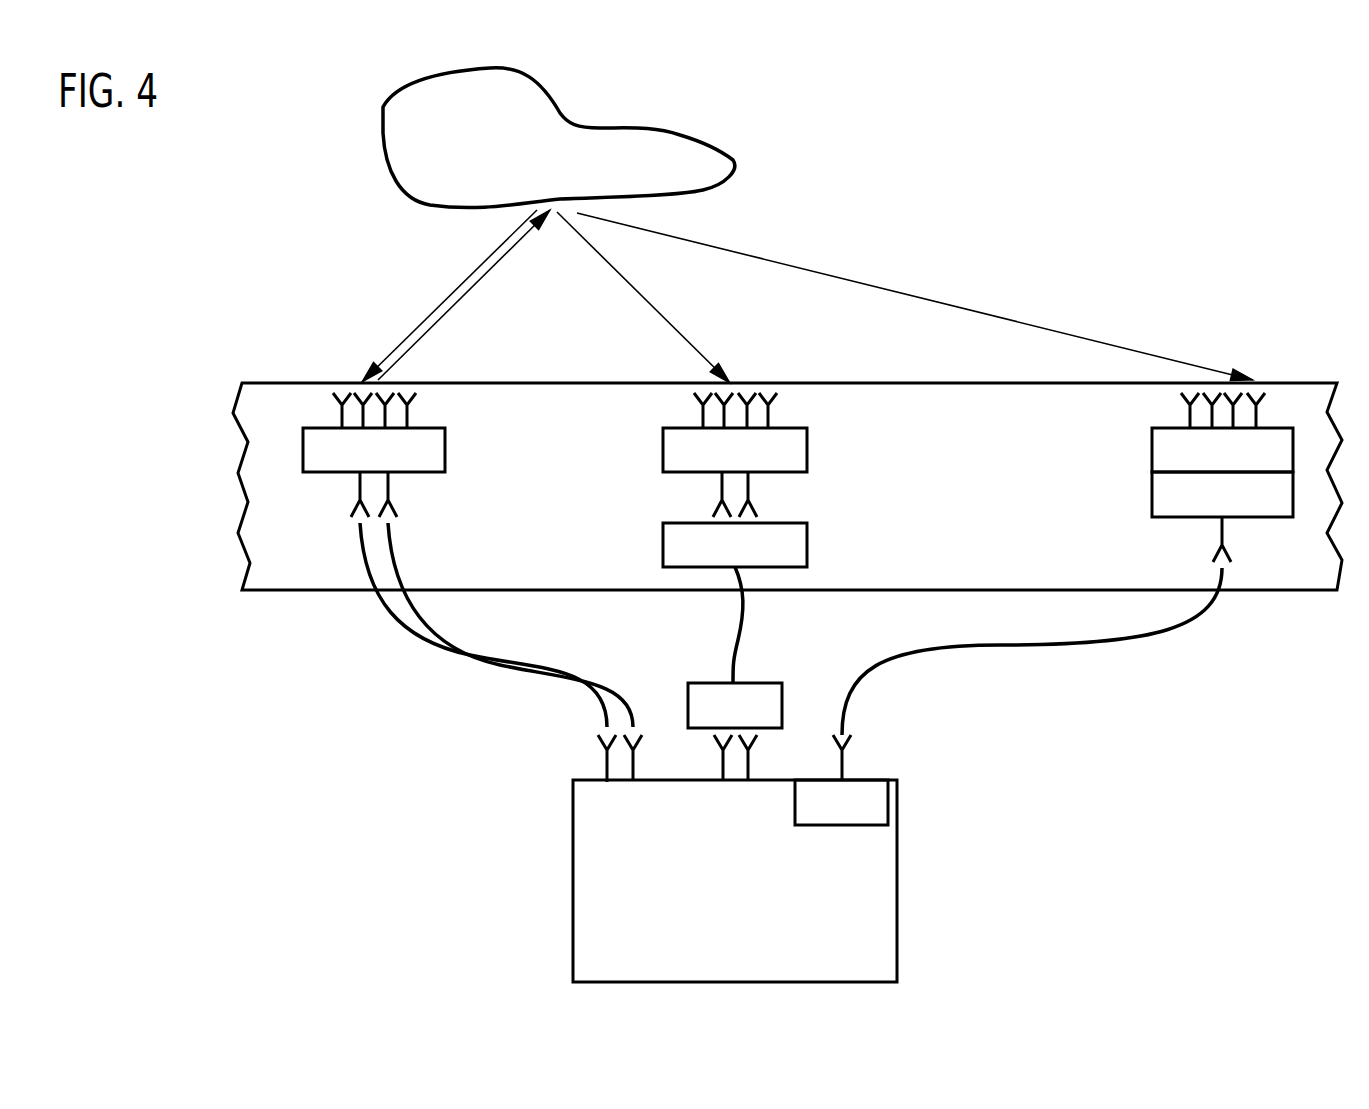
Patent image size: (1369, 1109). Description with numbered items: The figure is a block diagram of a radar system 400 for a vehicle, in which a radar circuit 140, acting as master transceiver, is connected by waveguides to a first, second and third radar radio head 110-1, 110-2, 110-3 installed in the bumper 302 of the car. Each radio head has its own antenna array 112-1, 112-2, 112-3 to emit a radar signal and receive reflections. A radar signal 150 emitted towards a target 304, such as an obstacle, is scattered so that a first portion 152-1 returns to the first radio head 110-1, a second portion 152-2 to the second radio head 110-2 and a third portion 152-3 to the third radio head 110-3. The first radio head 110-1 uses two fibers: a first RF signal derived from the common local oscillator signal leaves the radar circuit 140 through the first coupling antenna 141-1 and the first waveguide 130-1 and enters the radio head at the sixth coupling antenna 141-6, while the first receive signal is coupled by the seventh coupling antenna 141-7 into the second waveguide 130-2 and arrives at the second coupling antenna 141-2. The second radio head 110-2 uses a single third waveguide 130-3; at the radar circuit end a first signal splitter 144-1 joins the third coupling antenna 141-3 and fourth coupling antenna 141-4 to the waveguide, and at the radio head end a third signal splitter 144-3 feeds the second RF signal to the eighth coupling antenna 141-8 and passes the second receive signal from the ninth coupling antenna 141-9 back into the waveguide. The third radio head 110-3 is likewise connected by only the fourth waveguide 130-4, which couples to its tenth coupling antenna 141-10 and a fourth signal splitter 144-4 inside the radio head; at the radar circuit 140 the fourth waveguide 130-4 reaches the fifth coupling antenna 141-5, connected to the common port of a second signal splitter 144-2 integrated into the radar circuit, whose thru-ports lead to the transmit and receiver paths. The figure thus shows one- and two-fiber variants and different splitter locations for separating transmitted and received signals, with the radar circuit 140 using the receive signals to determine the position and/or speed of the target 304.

The radar system 400 is at (1057, 165).
The target 304 is at (383, 145).
The bumper 302 is at (243, 512).
The radar signal 150 is at (458, 302).
The first portion of the radar signal 152-1 is at (452, 293).
The second portion of the radar signal 152-2 is at (656, 310).
The third portion of the radar signal 152-3 is at (912, 296).
The first radar radio head 110-1 is at (303, 448).
The second radar radio head 110-2 is at (663, 448).
The third radar radio head 110-3 is at (1152, 448).
The first antenna array 112-1 is at (428, 417).
The second antenna array 112-2 is at (788, 417).
The third antenna array 112-3 is at (1172, 417).
The first waveguide 130-1 is at (553, 660).
The second waveguide 130-2 is at (442, 648).
The third waveguide 130-3 is at (745, 620).
The fourth waveguide 130-4 is at (1042, 650).
The radar circuit 140 is at (897, 878).
The first coupling antenna 141-1 is at (607, 780).
The second coupling antenna 141-2 is at (607, 765).
The third coupling antenna 141-3 is at (750, 768).
The fourth coupling antenna 141-4 is at (723, 780).
The fifth coupling antenna 141-5 is at (847, 767).
The sixth coupling antenna 141-6 is at (388, 485).
The seventh coupling antenna 141-7 is at (360, 485).
The eighth coupling antenna 141-8 is at (748, 485).
The ninth coupling antenna 141-9 is at (722, 485).
The tenth coupling antenna 141-10 is at (1222, 535).
The first signal splitter 144-1 is at (688, 705).
The second signal splitter 144-2 is at (888, 800).
The third signal splitter 144-3 is at (663, 545).
The fourth signal splitter 144-4 is at (1152, 495).